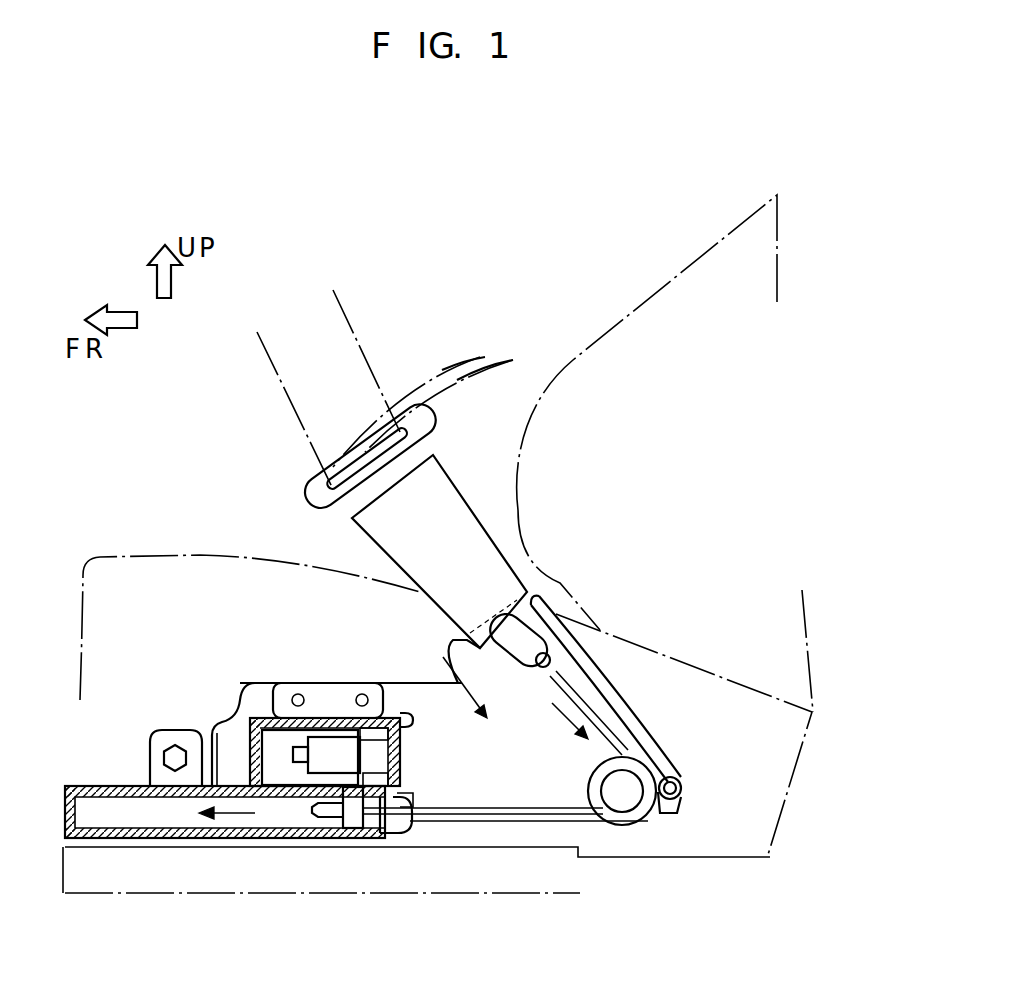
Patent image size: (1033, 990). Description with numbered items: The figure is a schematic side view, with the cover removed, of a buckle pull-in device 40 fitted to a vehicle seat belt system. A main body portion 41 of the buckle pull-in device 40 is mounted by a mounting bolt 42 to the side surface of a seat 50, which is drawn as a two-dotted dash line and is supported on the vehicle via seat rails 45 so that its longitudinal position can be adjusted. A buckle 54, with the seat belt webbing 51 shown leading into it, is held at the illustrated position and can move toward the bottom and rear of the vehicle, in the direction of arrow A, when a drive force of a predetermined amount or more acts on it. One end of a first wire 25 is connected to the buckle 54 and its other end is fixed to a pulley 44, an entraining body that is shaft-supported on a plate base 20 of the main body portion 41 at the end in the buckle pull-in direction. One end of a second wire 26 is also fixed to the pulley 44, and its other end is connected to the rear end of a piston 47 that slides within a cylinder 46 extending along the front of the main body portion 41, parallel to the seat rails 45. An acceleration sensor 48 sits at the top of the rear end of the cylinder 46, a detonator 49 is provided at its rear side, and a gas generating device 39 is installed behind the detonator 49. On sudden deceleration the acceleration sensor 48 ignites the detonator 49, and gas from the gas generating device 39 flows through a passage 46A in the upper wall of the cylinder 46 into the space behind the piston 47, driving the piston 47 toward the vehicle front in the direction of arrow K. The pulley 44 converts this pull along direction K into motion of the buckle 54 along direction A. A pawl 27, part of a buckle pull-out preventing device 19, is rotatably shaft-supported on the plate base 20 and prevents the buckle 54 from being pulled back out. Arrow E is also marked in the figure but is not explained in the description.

The buckle pull-out preventing device 19 is at (691, 751).
The plate base 20 is at (585, 652).
The first wire 25 is at (603, 723).
The second wire 26 is at (503, 816).
The pawl 27 is at (681, 797).
The gas generating device 39 is at (272, 745).
The buckle pull-in device 40 is at (201, 586).
The main body portion 41 is at (400, 678).
The mounting bolt 42 is at (178, 752).
The pulley 44 is at (676, 830).
The seat rails 45 is at (120, 897).
The cylinder 46 is at (311, 846).
The passage 46A is at (386, 834).
The piston 47 is at (355, 834).
The acceleration sensor 48 is at (348, 747).
The detonator 49 is at (298, 747).
The seat 50 is at (112, 553).
The webbing 51 is at (350, 333).
The buckle 54 is at (452, 478).
The sliding direction of the piston K is at (238, 818).
The direction of movement E is at (566, 718).
The moving direction of the buckle A is at (467, 697).